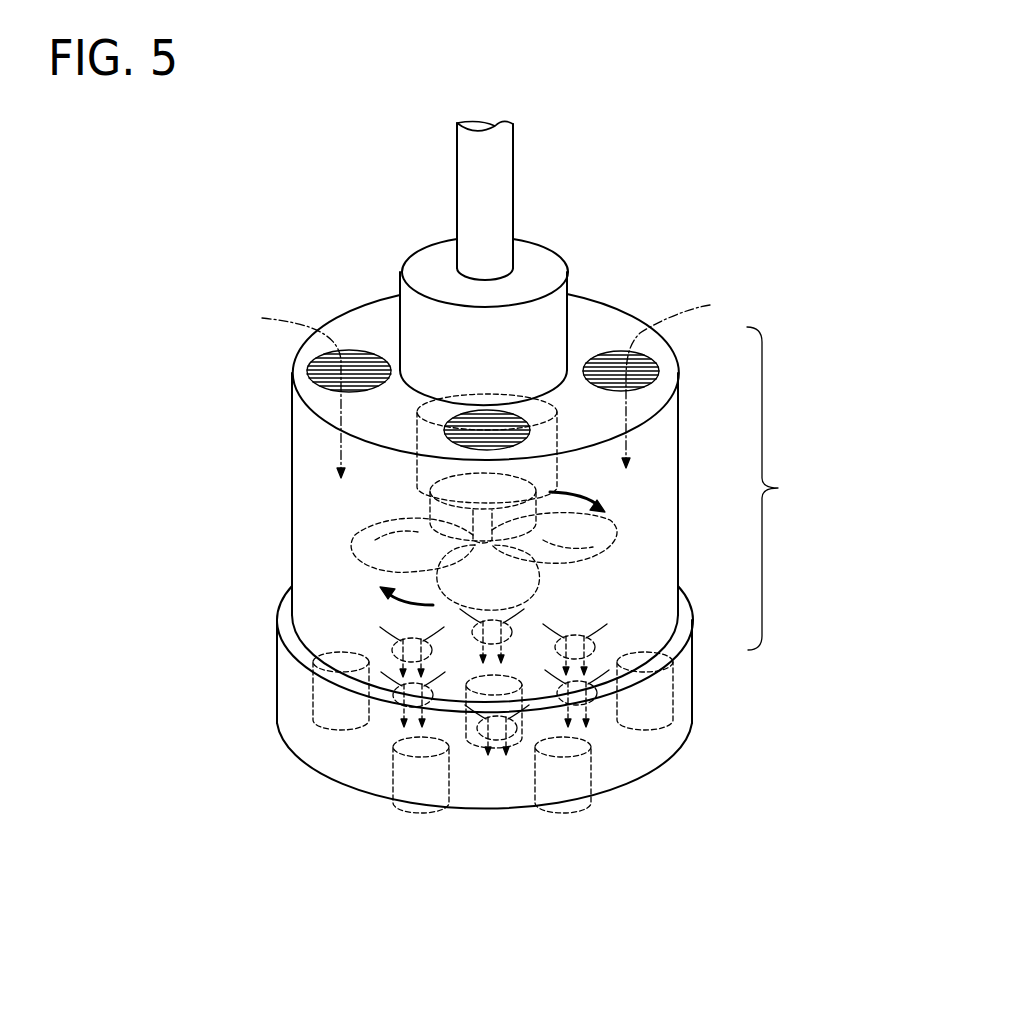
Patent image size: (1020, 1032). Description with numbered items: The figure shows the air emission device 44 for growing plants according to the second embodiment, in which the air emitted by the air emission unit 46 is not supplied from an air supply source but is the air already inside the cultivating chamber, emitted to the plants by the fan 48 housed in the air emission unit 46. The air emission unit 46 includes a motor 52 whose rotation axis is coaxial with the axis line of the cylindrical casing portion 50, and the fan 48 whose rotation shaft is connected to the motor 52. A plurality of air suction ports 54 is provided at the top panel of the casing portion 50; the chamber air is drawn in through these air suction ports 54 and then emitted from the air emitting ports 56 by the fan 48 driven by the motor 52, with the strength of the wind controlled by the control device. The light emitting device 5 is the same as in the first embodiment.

The light emitting device 5 is at (342, 733).
The air emission device 44 is at (598, 270).
The air emission unit 46 is at (784, 488).
The fan 48 is at (597, 540).
The cylindrical casing portion 50 is at (307, 570).
The motor 52 is at (558, 470).
The air suction ports 54 is at (652, 368).
The air emitting ports 56 is at (590, 652).